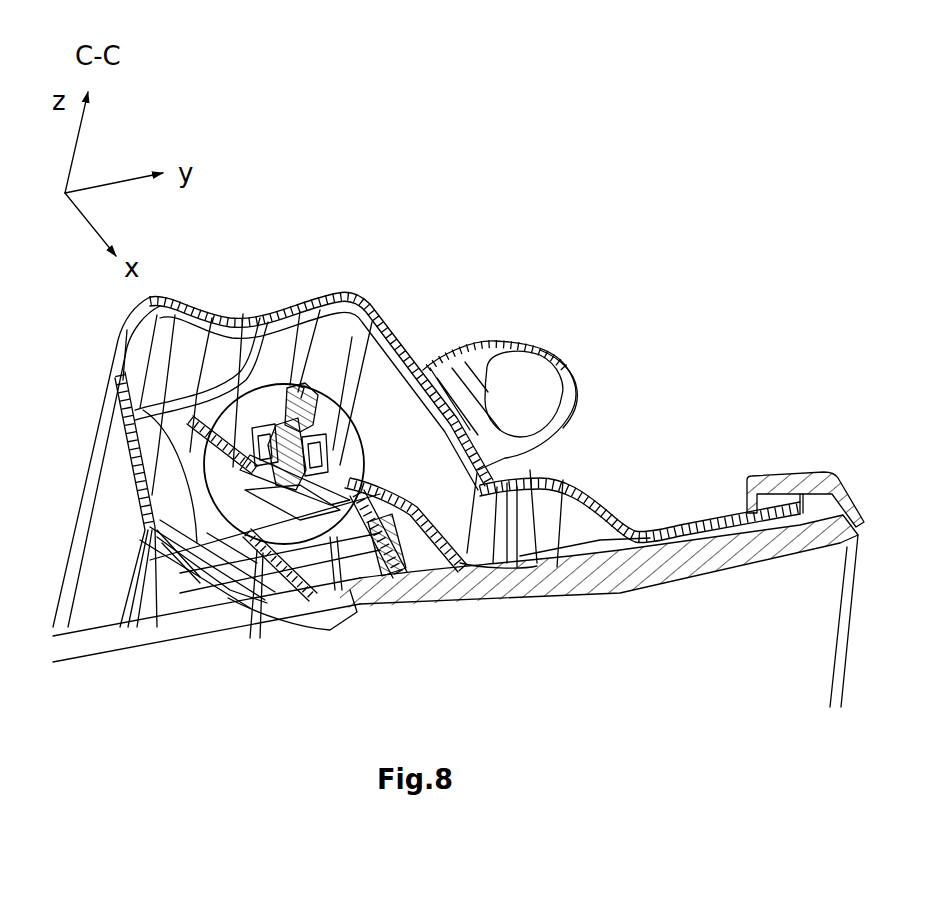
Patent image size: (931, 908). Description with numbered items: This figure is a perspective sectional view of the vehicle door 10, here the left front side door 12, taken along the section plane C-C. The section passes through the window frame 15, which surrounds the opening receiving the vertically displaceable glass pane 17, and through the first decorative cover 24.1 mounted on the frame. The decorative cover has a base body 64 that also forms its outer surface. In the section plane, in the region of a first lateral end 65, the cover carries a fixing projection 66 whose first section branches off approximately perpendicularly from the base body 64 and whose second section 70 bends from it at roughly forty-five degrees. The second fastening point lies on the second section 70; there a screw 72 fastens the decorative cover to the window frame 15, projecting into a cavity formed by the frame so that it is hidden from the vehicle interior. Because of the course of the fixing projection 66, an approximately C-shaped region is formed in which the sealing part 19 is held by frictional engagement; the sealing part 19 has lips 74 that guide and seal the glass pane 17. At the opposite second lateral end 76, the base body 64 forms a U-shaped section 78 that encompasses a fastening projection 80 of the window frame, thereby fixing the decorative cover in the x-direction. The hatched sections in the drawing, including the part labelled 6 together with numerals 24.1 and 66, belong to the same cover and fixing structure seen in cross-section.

The vehicle door 10 is at (458, 407).
The left front side door 12 is at (208, 66).
The window frame 15 is at (626, 527).
The glass pane 17 is at (87, 635).
The sealing part 19 is at (348, 570).
The first decorative cover 24.1 is at (487, 559).
The base body 64 is at (697, 557).
The fixing projection 66 is at (331, 559).
The clamp arm 6 is at (380, 535).
The second section 70 is at (247, 385).
The screw 72 is at (297, 393).
The lips 74 is at (298, 600).
The first lateral end 65 is at (315, 694).
The second lateral end 76 is at (784, 443).
The U-shaped section 78 is at (778, 435).
The fastening projection 80 is at (740, 510).